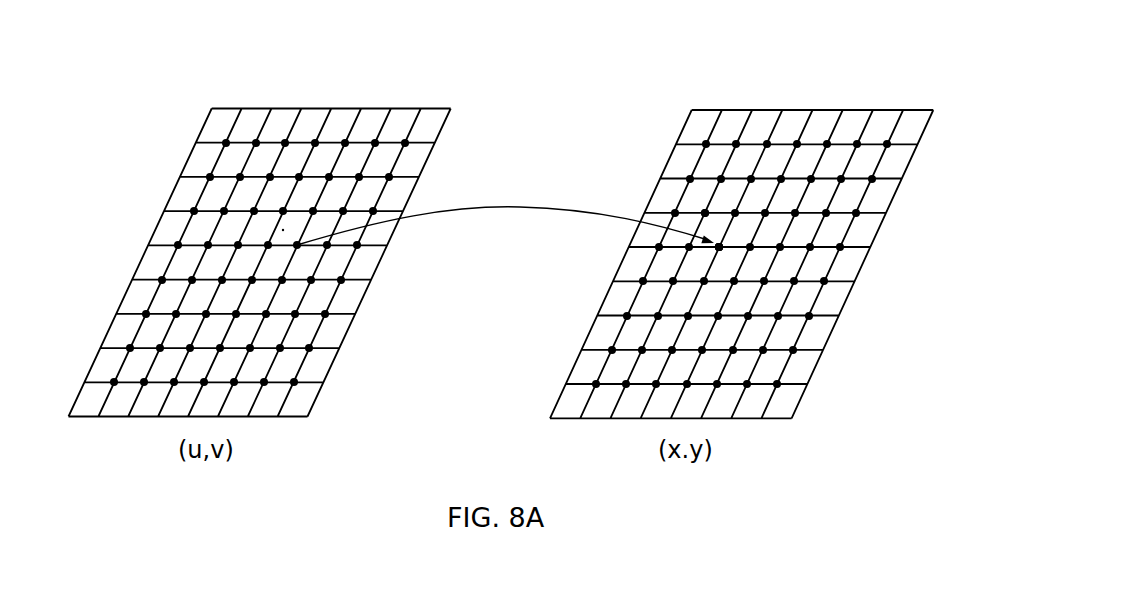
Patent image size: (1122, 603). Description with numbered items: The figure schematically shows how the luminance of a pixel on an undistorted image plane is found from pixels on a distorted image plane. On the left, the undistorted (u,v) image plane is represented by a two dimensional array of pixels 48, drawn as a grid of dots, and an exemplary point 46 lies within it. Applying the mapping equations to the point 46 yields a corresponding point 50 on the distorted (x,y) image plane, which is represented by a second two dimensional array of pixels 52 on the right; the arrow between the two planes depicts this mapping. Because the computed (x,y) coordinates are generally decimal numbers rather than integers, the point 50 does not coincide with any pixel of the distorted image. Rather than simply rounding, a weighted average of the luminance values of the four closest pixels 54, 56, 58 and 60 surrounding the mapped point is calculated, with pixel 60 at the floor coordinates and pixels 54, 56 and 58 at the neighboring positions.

The point on the undistorted image plane 46 is at (283, 230).
The two dimensional array of pixels 48 is at (428, 108).
The corresponding point on the distorted image plane 50 is at (722, 240).
The two dimensional array of pixels 52 is at (705, 110).
The pixel 54 is at (719, 247).
The pixel 56 is at (722, 250).
The pixel 58 is at (722, 245).
The pixel 60 is at (705, 212).